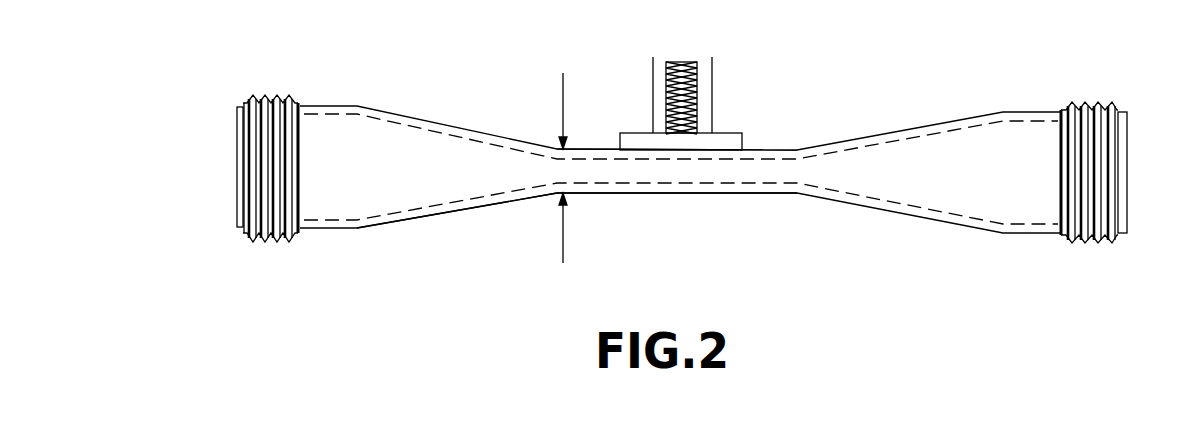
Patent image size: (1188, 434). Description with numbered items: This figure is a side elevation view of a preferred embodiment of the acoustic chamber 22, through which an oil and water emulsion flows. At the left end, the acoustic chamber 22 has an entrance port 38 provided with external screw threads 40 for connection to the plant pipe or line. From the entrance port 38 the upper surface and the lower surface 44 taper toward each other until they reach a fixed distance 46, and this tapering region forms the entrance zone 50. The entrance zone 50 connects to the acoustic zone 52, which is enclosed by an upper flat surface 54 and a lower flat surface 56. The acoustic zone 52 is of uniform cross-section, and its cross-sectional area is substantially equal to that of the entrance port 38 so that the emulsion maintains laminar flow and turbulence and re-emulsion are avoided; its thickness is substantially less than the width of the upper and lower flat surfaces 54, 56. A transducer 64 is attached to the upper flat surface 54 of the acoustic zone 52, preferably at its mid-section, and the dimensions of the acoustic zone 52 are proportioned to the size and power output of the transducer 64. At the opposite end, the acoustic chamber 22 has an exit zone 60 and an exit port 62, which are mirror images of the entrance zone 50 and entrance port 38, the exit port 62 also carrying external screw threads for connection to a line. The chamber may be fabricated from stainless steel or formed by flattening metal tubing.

The acoustic chamber 22 is at (876, 138).
The entrance port 38 is at (237, 135).
The external screw threads 40 is at (277, 97).
The lower surface of the entrance port 44 is at (402, 222).
The fixed distance 46 is at (562, 171).
The entrance zone 50 is at (390, 190).
The acoustic zone 52 is at (723, 174).
The upper flat surface 54 is at (600, 149).
The lower flat surface 56 is at (600, 193).
The exit zone 60 is at (968, 196).
The exit port 62 is at (1128, 139).
The transducer 64 is at (712, 62).